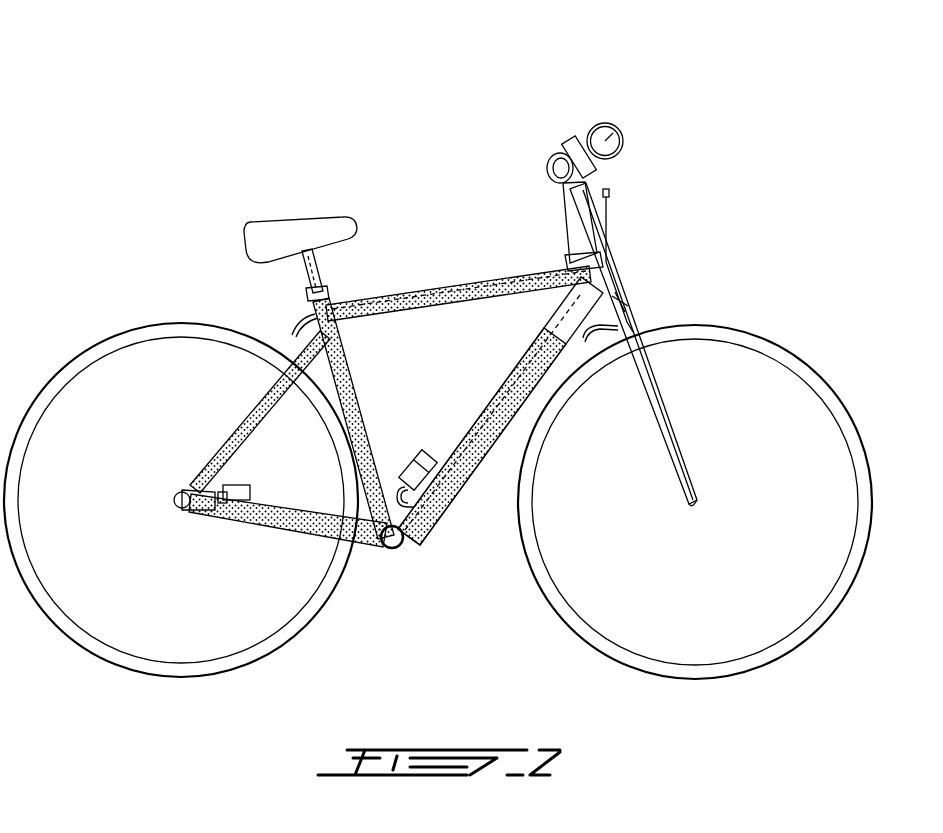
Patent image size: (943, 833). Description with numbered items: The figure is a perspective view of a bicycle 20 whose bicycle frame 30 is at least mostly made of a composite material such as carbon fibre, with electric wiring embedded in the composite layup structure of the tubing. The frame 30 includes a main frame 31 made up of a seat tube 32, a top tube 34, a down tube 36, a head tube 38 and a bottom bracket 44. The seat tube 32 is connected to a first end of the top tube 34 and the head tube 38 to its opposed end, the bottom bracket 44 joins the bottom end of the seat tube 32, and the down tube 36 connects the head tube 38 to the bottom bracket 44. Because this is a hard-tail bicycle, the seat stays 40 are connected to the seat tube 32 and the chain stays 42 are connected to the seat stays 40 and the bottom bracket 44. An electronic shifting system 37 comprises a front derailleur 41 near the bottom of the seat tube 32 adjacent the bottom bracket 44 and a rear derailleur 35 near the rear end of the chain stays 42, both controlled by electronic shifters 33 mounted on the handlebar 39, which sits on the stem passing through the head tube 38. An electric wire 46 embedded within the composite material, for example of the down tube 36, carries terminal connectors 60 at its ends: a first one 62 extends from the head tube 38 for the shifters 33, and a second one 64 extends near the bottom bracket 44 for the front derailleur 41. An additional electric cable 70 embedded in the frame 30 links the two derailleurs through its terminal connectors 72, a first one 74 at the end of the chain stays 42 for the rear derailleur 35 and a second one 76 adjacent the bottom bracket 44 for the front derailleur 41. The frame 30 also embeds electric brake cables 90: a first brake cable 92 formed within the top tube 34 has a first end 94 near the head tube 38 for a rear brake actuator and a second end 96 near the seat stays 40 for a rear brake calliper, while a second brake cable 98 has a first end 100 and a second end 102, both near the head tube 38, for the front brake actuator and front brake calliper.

The bicycle 20 is at (190, 172).
The bicycle frame 30 is at (447, 262).
The main frame 31 is at (472, 282).
The seat tube 32 is at (368, 405).
The electronic shifters 33 is at (578, 136).
The top tube 34 is at (485, 298).
The rear derailleur 35 is at (233, 510).
The down tube 36 is at (474, 458).
The electronic shifting system 37 is at (552, 126).
The head tube 38 is at (602, 265).
The handlebar 39 is at (613, 124).
The seat stays 40 is at (225, 445).
The front derailleur 41 is at (438, 492).
The chain stays 42 is at (240, 500).
The bottom bracket 44 is at (397, 552).
The electric wire 46 is at (611, 238).
The terminal connectors 60 is at (614, 196).
The first terminal connector 62 is at (612, 190).
The second terminal connector 64 is at (410, 462).
The additional electric cable 70 is at (313, 540).
The terminal connectors 72 is at (222, 493).
The first terminal connector 74 is at (205, 489).
The second terminal connector 76 is at (378, 548).
The electric brake cables 90 is at (575, 277).
The first brake cable 92 is at (378, 296).
The first end of the first brake cable 94 is at (583, 275).
The second end of the first brake cable 96 is at (292, 320).
The second brake cable 98 is at (620, 300).
The first end of the second brake cable 100 is at (610, 185).
The second end of the second brake cable 102 is at (640, 327).